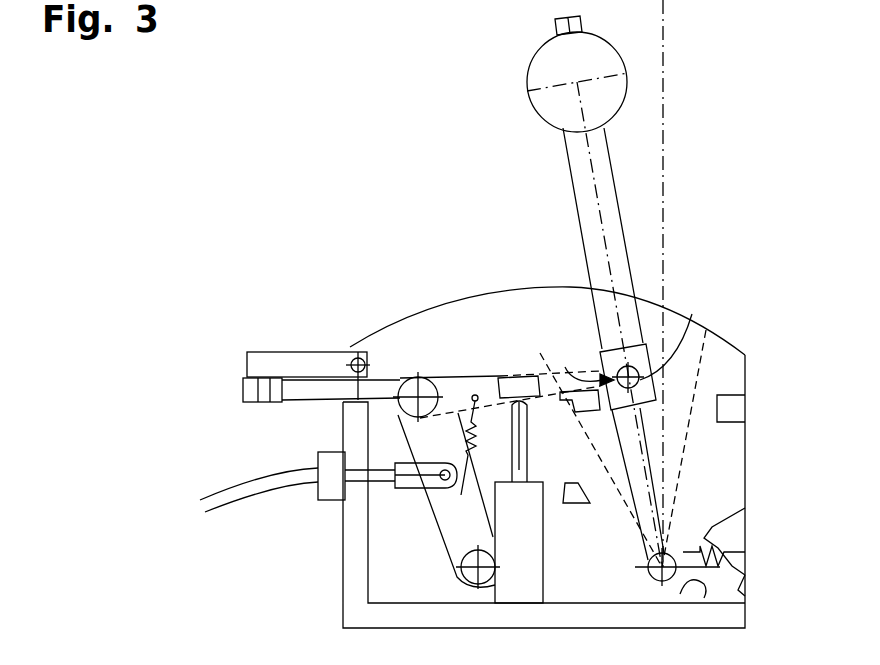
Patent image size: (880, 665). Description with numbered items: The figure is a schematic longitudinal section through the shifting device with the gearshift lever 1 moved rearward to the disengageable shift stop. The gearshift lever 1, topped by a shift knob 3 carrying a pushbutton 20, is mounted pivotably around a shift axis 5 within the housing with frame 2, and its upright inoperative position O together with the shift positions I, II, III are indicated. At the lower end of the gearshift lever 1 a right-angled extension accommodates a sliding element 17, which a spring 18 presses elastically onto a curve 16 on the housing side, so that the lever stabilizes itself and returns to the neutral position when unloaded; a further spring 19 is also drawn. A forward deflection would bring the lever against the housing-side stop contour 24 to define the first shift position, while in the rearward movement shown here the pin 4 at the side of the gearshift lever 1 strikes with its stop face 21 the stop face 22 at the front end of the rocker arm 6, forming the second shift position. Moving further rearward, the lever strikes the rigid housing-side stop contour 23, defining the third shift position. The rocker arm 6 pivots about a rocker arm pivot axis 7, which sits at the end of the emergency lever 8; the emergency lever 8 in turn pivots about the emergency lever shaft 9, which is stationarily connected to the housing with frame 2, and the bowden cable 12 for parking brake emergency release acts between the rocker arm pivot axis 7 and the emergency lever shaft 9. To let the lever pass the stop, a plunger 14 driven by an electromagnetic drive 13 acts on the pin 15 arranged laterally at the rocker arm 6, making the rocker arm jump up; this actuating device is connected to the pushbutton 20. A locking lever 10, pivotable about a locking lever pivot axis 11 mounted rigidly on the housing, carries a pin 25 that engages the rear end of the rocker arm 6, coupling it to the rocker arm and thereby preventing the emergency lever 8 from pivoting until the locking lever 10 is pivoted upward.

The gearshift lever 1 is at (575, 233).
The housing with frame 2 is at (343, 592).
The shift knob 3 is at (577, 82).
The pin 4 is at (640, 378).
The shift axis 5 is at (648, 571).
The rocker arm 6 is at (465, 405).
The rocker arm pivot axis 7 is at (415, 419).
The emergency lever 8 is at (468, 533).
The emergency lever shaft 9 is at (459, 577).
The locking lever 10 is at (300, 374).
The locking lever pivot axis 11 is at (356, 360).
The bowden cable for parking brake emergency release 12 is at (318, 470).
The electromagnetic drive for plunger 13 is at (531, 541).
The plunger 14 is at (527, 462).
The pin at rocker arm 15 is at (518, 378).
The curve 16 is at (740, 528).
The sliding element 17 is at (746, 576).
The spring 18 is at (693, 596).
The spring 19 is at (474, 437).
The pushbutton 20 is at (553, 25).
The stop face 21 is at (671, 333).
The stop face 22 is at (578, 375).
The housing-side stop contour 23 is at (570, 505).
The housing-side stop contour 24 is at (747, 401).
The pin 25 is at (262, 403).
The inoperative position O is at (663, 222).
The shift position I is at (715, 360).
The shift position II is at (645, 471).
The shift position III is at (610, 479).